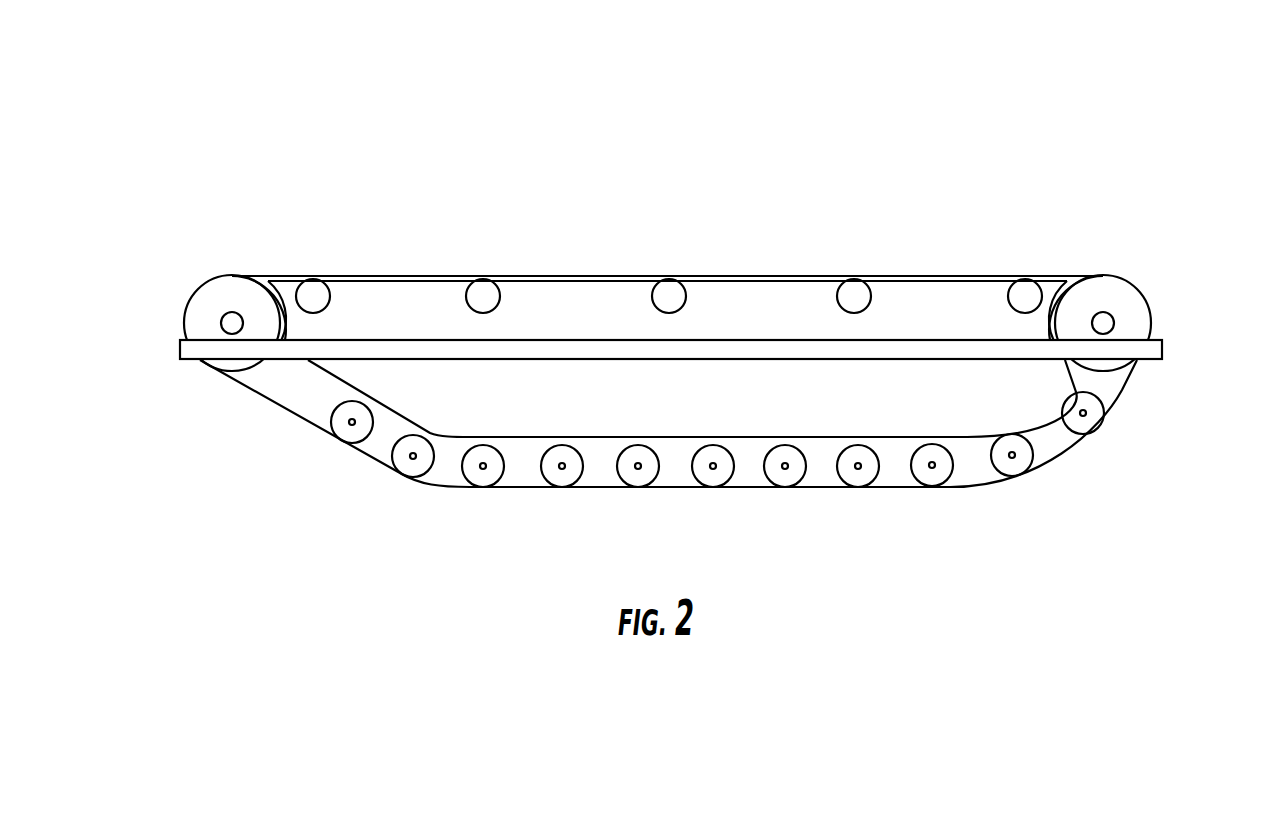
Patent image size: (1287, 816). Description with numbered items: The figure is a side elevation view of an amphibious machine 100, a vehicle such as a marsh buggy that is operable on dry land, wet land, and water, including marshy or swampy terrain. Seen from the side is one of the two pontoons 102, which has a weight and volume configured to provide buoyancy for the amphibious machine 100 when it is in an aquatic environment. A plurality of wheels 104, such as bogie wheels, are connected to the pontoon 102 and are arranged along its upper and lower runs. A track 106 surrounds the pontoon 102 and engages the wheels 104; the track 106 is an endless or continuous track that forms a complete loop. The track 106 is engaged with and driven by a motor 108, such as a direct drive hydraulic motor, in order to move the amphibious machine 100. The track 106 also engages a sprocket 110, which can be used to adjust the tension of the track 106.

The amphibious machine 100 is at (972, 140).
The pontoon 102 is at (472, 393).
The wheels 104 is at (558, 472).
The track 106 is at (818, 487).
The motor 108 is at (1137, 310).
The sprocket 110 is at (203, 309).